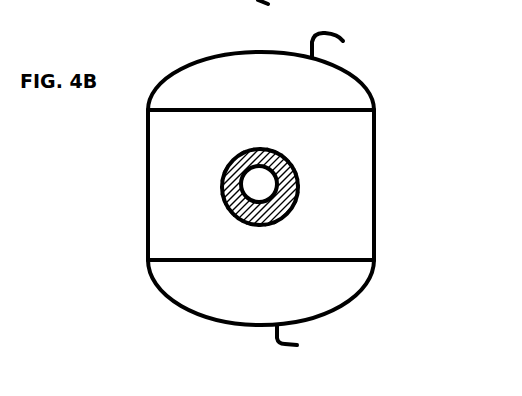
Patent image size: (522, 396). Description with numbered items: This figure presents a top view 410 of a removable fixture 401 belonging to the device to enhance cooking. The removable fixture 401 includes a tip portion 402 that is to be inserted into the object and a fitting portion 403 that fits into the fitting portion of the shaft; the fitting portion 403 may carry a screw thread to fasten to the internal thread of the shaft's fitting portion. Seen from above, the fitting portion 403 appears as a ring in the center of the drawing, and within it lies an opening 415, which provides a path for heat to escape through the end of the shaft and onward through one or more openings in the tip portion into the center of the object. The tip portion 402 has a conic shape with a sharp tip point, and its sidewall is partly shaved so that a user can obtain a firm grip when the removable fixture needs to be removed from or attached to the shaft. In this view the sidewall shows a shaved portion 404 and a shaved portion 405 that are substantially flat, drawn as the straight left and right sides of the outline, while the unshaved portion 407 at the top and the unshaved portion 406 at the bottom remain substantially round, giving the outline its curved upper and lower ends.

The removable fixture 401 is at (393, 143).
The tip portion 402 is at (380, 273).
The fitting portion 403 is at (222, 187).
The shaved portion 404 is at (148, 190).
The shaved portion 405 is at (387, 198).
The unshaved portion 406 is at (305, 338).
The unshaved portion 407 is at (350, 36).
The top view 410 is at (88, 184).
The opening 415 is at (260, 185).